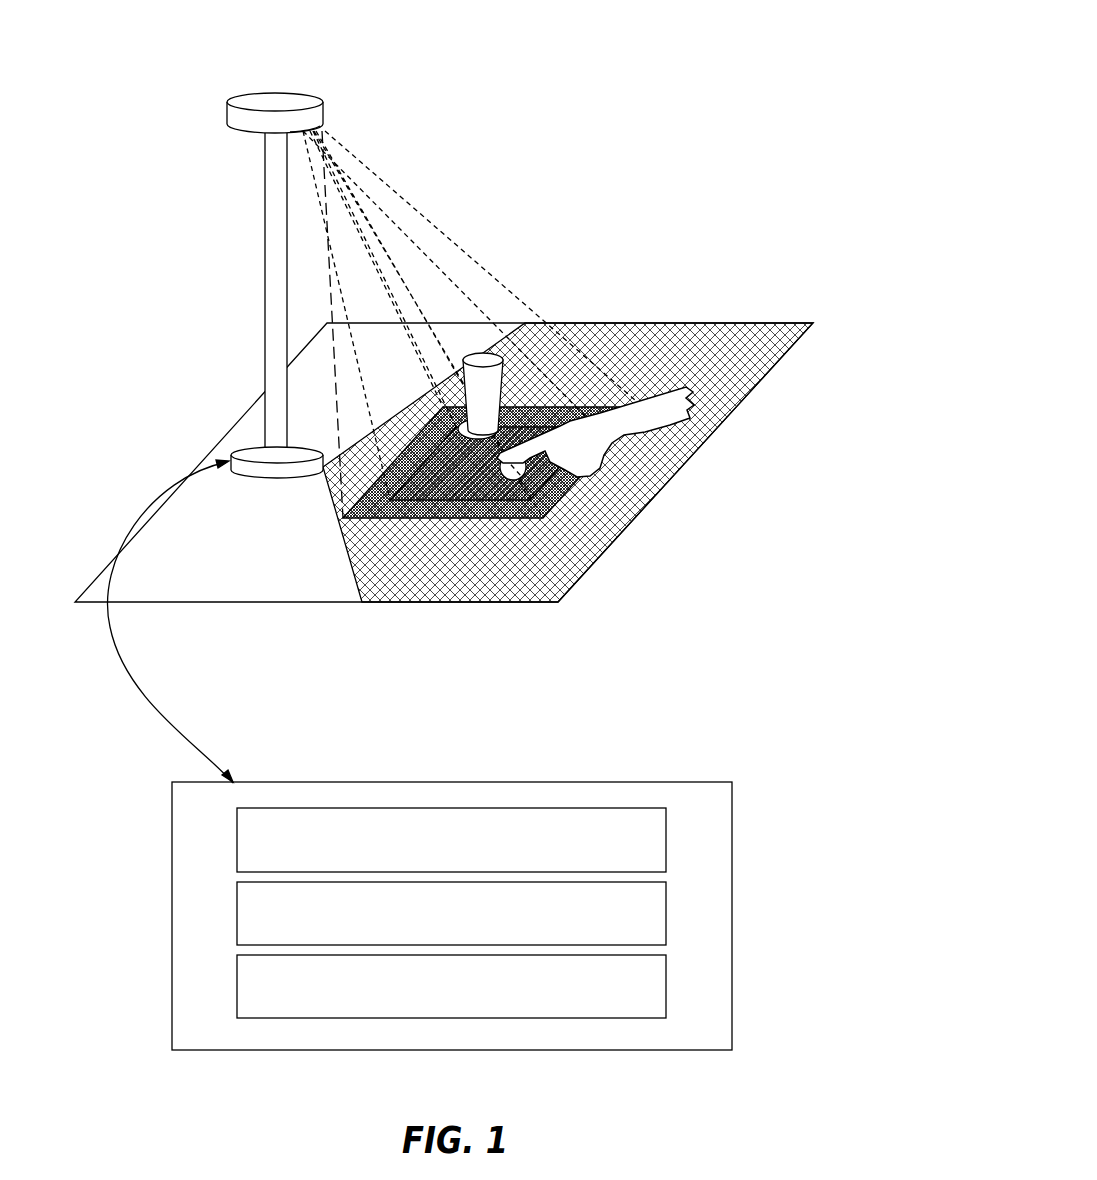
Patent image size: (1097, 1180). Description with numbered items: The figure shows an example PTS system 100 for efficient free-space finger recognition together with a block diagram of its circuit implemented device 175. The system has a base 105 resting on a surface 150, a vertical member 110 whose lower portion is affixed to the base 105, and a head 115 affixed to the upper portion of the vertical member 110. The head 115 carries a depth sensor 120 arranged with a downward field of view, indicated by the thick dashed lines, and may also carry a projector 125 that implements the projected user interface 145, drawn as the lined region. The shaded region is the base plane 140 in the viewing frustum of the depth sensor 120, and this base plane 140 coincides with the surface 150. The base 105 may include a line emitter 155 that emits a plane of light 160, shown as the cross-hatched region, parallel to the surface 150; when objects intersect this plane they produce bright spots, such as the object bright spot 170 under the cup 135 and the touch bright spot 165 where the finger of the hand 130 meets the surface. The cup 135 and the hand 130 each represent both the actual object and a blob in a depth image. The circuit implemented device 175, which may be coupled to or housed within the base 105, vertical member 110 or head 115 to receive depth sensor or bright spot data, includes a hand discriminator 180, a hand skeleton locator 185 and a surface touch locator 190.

The PTS system 100 is at (763, 28).
The base 105 is at (215, 595).
The vertical member 110 is at (263, 362).
The head 115 is at (272, 110).
The depth sensor 120 is at (322, 125).
The projector 125 is at (305, 130).
The hand 130 is at (690, 420).
The cup 135 is at (492, 351).
The base plane 140 is at (545, 515).
The projected user interface 145 is at (463, 503).
The surface 150 is at (242, 595).
The line emitter 155 is at (320, 467).
The plane of light 160 is at (418, 598).
The touch bright spot 165 is at (527, 477).
The object bright spot 170 is at (458, 428).
The circuit implemented device 175 is at (498, 903).
The hand discriminator 180 is at (666, 856).
The hand skeleton locator 185 is at (666, 930).
The surface touch locator 190 is at (666, 1005).